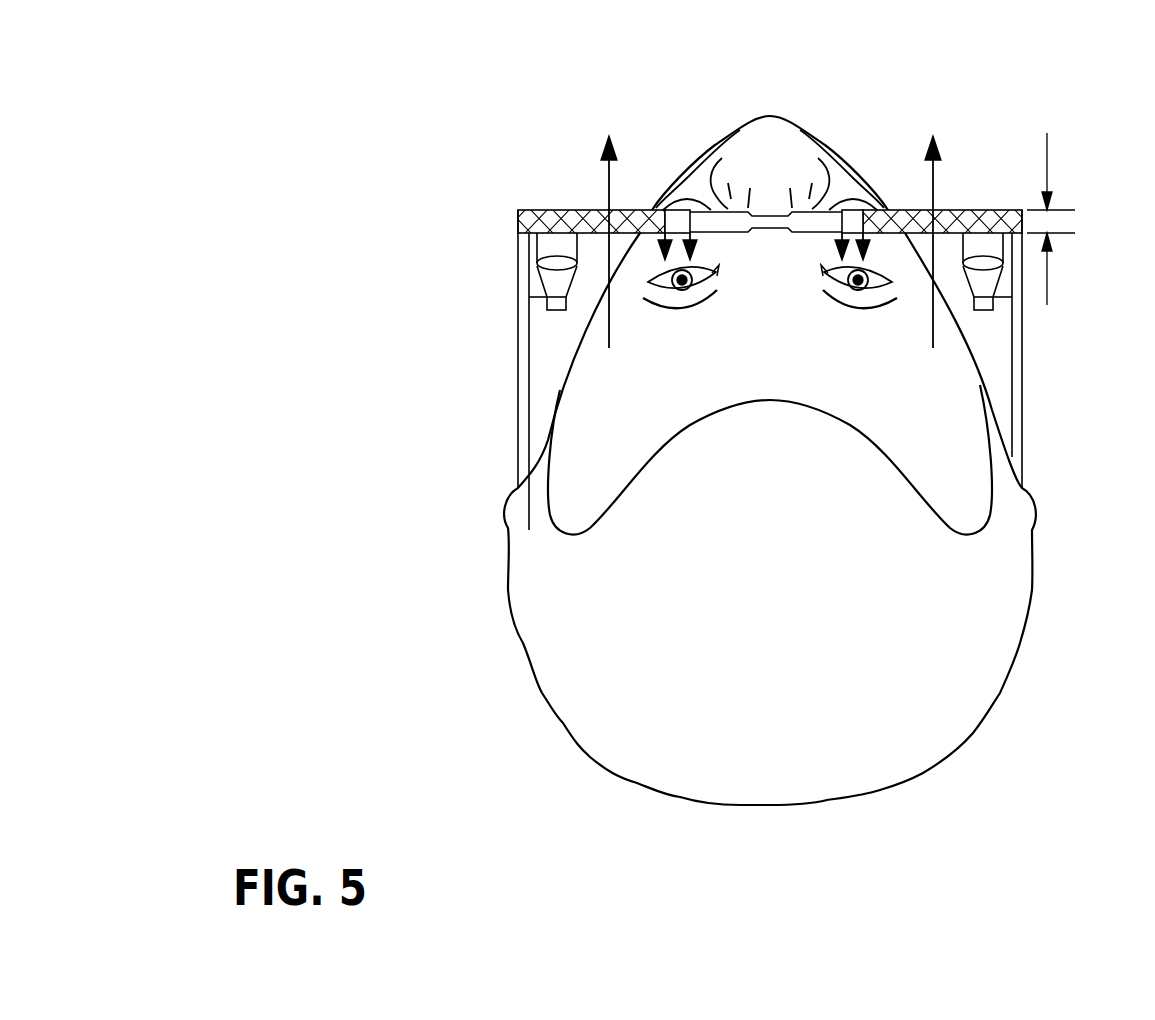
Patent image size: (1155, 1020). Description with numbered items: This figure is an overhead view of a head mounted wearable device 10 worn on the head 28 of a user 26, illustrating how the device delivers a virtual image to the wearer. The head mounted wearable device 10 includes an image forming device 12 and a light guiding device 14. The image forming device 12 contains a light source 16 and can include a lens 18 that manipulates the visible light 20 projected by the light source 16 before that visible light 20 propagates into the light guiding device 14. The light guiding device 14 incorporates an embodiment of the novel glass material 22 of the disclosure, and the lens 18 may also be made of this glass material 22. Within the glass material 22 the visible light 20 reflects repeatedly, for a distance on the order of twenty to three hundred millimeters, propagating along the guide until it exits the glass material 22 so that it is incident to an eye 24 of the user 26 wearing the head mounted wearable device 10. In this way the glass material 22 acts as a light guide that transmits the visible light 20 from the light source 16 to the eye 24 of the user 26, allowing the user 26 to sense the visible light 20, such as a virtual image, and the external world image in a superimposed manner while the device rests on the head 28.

The head mounted wearable device 10 is at (496, 185).
The image forming device 12 is at (536, 283).
The light guiding device 14 is at (548, 200).
The light source 16 is at (555, 310).
The lens 18 is at (553, 263).
The visible light 20 is at (697, 237).
The glass material 22 is at (637, 210).
The eye 24 is at (681, 292).
The user 26 is at (608, 680).
The head 28 is at (933, 680).